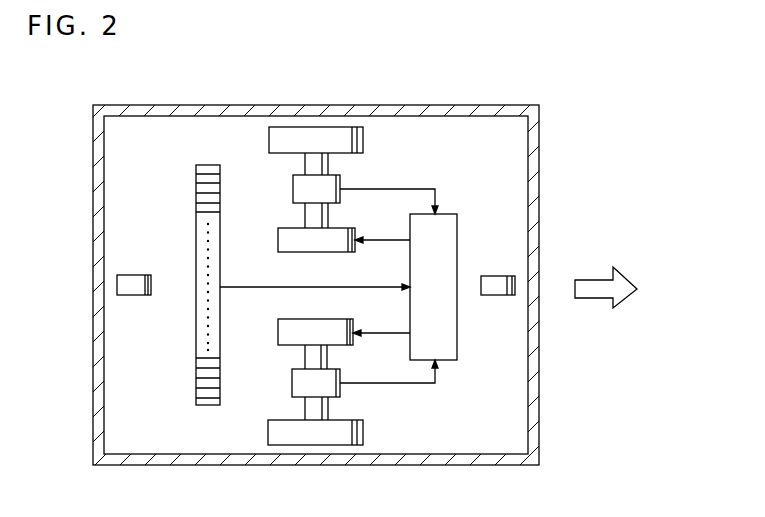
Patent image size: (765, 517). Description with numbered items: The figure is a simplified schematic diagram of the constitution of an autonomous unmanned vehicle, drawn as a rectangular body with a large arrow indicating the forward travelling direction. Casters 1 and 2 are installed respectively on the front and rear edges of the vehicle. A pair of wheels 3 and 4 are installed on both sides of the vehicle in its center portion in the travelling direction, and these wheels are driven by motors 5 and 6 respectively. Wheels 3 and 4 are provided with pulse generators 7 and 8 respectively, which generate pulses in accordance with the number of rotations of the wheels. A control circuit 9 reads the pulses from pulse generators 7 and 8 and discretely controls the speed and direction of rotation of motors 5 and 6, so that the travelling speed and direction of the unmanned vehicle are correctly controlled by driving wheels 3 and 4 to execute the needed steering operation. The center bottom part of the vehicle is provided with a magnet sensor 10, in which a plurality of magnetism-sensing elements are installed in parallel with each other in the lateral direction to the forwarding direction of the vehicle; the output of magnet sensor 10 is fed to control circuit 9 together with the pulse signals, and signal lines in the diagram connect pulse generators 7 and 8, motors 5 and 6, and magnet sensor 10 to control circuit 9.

The caster 1 is at (494, 296).
The caster 2 is at (128, 296).
The wheel 3 is at (363, 141).
The wheel 4 is at (363, 432).
The motor 5 is at (278, 241).
The motor 6 is at (278, 323).
The pulse generator 7 is at (293, 188).
The pulse generator 8 is at (292, 381).
The control circuit 9 is at (440, 297).
The magnet sensor 10 is at (196, 194).